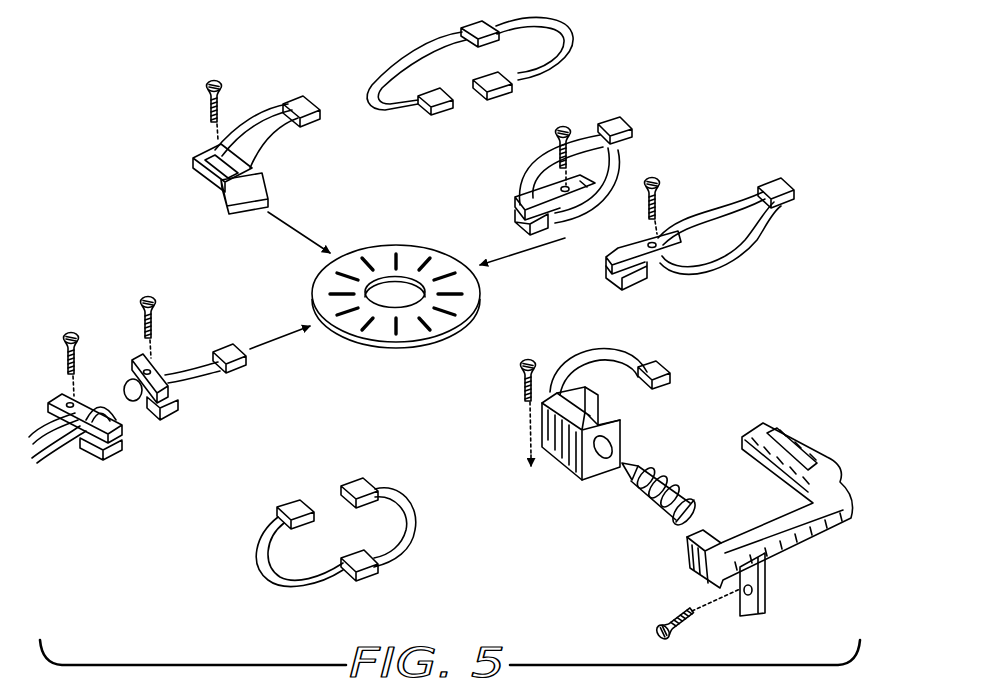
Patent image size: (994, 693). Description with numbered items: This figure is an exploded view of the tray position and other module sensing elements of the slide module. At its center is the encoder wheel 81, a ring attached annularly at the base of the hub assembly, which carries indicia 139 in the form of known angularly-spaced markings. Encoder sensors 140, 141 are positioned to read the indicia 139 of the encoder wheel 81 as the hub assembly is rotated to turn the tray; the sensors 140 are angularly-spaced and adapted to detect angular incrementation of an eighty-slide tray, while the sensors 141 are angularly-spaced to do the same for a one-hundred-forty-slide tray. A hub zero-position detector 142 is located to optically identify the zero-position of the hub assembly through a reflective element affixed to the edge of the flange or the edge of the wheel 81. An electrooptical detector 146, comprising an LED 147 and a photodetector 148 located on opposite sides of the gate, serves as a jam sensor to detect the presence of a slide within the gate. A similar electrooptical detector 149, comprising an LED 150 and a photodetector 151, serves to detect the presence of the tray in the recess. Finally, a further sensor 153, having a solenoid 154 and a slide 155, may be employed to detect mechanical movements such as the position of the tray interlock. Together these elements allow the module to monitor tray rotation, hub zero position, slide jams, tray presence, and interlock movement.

The encoder wheel 81 is at (443, 328).
The indicia 139 is at (436, 280).
The encoder sensors 140 is at (136, 456).
The encoder sensors 141 is at (665, 160).
The hub zero-position detector 142 is at (280, 175).
The electrooptical detector 146 is at (393, 569).
The LED 147 is at (292, 500).
The photodetector 148 is at (357, 485).
The electrooptical detector 149 is at (456, 20).
The LED 150 is at (440, 115).
The photodetector 151 is at (500, 96).
The sensor 153 is at (640, 531).
The solenoid 154 is at (582, 463).
The slide 155 is at (812, 527).